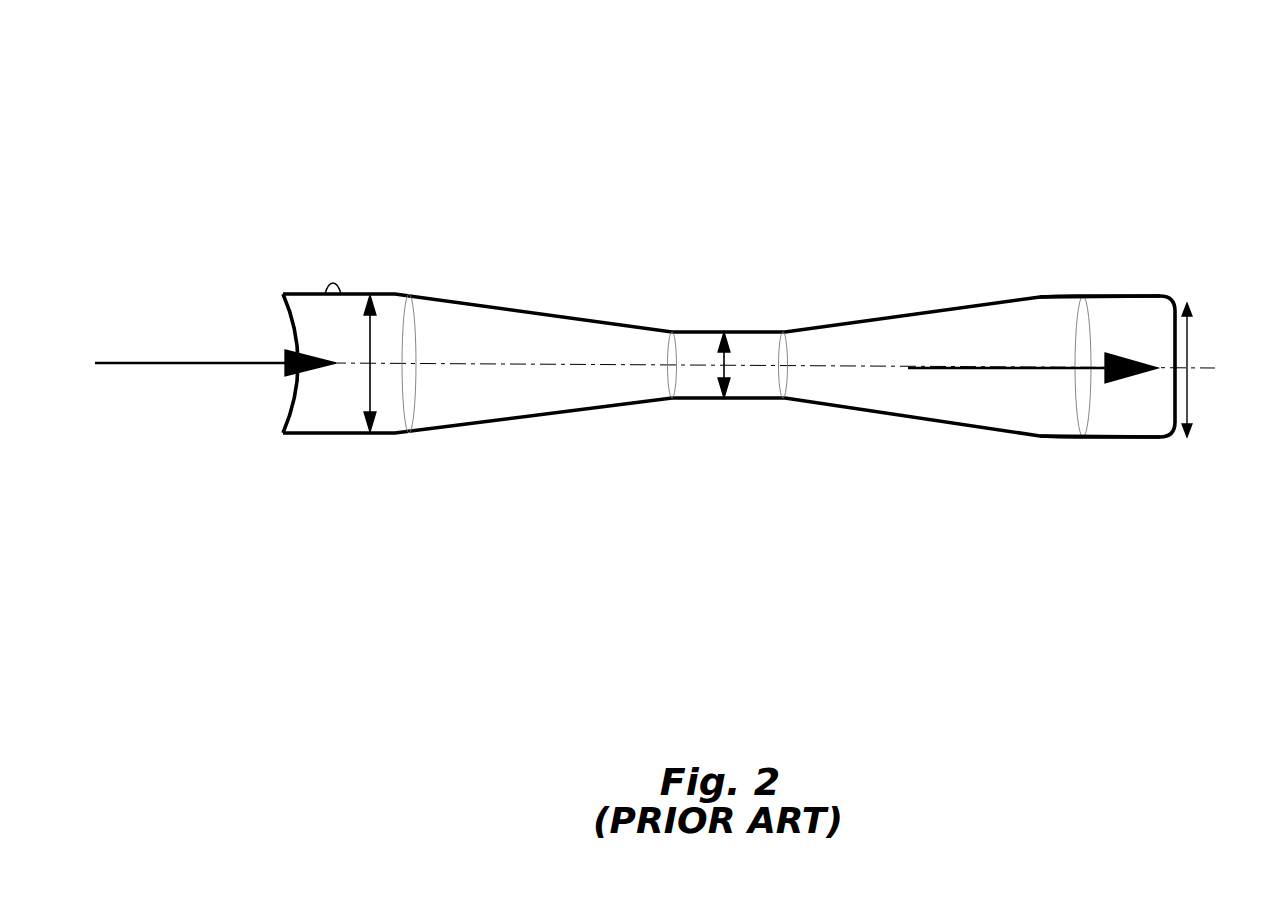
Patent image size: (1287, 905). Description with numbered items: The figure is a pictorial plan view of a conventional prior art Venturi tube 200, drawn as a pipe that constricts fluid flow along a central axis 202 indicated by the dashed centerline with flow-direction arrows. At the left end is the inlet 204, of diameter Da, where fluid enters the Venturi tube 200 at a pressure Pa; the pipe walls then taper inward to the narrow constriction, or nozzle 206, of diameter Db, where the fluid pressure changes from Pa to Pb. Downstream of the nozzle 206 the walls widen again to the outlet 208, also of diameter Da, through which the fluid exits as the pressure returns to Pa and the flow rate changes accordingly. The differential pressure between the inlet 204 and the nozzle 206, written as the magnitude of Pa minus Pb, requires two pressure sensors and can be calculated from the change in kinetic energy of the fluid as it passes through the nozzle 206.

The Venturi tube 200 is at (682, 252).
The axis 202 is at (1197, 368).
The inlet 204 is at (322, 238).
The nozzle 206 is at (722, 258).
The outlet 208 is at (1138, 266).